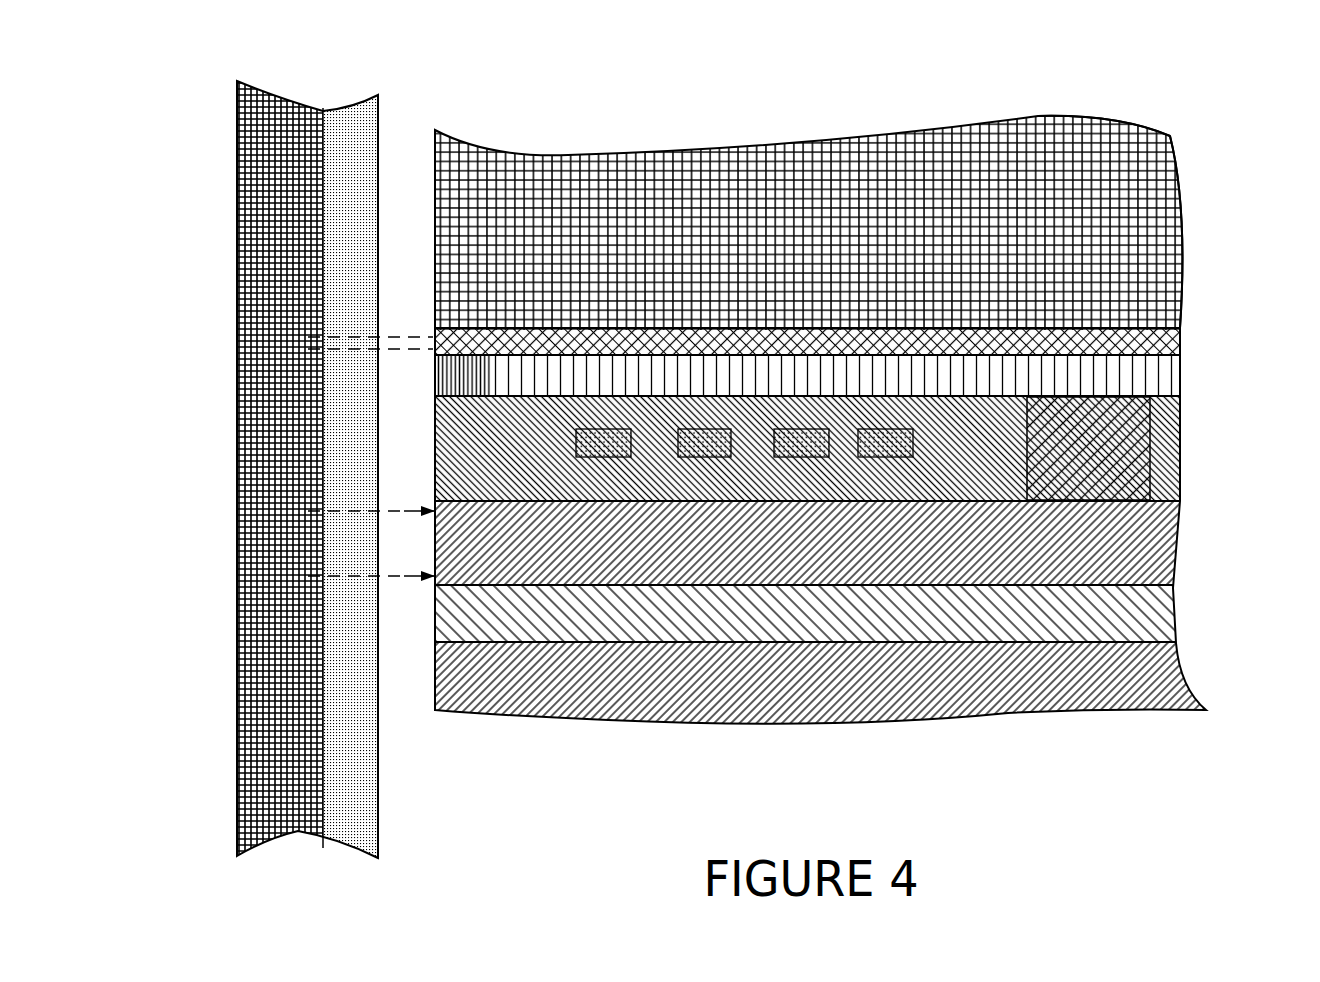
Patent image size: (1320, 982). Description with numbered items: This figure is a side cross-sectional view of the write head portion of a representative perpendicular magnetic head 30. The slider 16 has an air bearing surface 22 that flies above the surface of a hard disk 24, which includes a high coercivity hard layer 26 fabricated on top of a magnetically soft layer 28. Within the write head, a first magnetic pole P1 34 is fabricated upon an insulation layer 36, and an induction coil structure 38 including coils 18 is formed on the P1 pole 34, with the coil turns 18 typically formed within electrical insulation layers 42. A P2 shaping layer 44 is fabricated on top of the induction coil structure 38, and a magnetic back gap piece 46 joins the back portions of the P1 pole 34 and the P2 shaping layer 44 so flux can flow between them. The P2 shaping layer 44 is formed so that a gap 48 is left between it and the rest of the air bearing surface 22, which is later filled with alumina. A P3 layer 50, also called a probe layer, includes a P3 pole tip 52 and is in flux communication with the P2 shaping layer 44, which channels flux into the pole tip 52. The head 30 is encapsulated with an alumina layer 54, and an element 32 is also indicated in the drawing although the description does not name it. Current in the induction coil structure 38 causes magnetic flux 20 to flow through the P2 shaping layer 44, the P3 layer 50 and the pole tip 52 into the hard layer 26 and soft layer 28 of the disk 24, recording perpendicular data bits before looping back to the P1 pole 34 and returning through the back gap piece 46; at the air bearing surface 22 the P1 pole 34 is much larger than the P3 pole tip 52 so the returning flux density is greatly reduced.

The slider 16 is at (1046, 94).
The coils 18 is at (797, 450).
The magnetic flux 20 is at (381, 577).
The air bearing surface 22 is at (426, 186).
The hard disk 24 is at (192, 256).
The hard layer 26 is at (343, 118).
The magnetically soft layer 28 is at (280, 98).
The perpendicular magnetic head 30 is at (1166, 127).
The side edge 32 is at (1192, 286).
The first magnetic pole P1 34 is at (1132, 560).
The insulation layer 36 is at (1132, 608).
The induction coil structure 38 is at (822, 453).
The electrical insulation layers 42 is at (980, 456).
The P2 shaping layer 44 is at (1143, 370).
The magnetic back gap piece 46 is at (1102, 417).
The gap 48 is at (424, 358).
The P3 layer 50 is at (1170, 337).
The P3 pole tip 52 is at (424, 321).
The alumina layer 54 is at (950, 148).